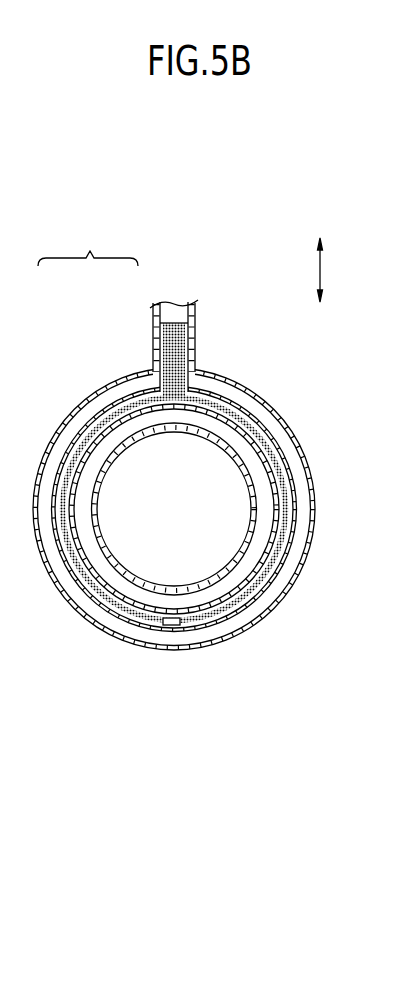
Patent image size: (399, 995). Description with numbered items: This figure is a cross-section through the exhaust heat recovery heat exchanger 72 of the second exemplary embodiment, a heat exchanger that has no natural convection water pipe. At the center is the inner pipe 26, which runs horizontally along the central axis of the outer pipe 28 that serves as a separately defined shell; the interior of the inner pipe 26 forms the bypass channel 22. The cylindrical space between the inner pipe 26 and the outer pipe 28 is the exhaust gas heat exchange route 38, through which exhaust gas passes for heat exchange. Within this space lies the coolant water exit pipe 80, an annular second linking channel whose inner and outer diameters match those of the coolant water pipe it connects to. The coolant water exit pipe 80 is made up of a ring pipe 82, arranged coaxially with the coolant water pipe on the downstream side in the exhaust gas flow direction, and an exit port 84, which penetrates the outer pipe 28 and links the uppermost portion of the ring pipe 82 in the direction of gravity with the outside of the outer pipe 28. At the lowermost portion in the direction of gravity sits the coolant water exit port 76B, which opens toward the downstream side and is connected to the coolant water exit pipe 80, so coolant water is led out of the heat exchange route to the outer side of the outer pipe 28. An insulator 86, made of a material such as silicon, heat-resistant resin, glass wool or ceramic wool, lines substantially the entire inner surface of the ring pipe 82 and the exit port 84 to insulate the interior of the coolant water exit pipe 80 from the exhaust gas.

The bypass channel 22 is at (193, 523).
The inner pipe 26 is at (208, 428).
The outer pipe 28 is at (275, 408).
The exhaust gas heat exchange route 38 is at (262, 483).
The exhaust heat recovery heat exchanger 72 is at (246, 296).
The coolant water exit port 76B is at (172, 626).
The coolant water exit pipe 80 is at (166, 435).
The ring pipe 82 is at (120, 397).
The exit port 84 is at (152, 441).
The insulator 86 is at (93, 414).